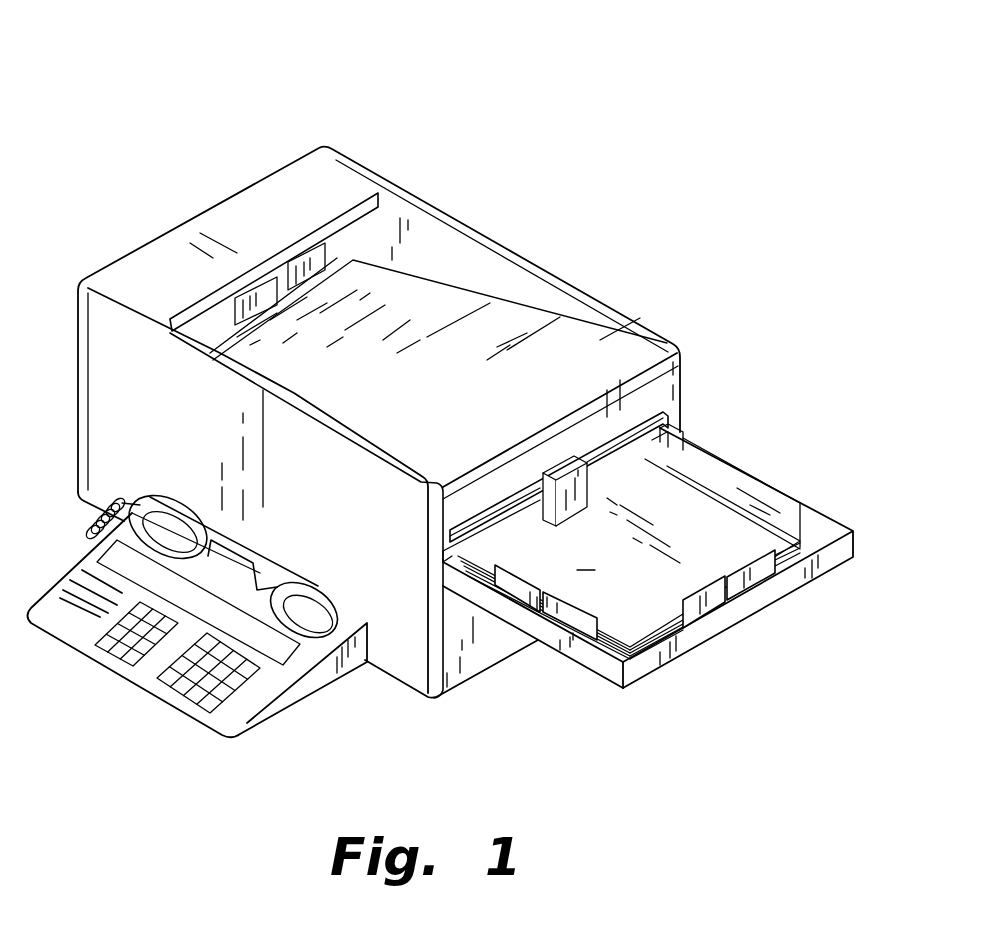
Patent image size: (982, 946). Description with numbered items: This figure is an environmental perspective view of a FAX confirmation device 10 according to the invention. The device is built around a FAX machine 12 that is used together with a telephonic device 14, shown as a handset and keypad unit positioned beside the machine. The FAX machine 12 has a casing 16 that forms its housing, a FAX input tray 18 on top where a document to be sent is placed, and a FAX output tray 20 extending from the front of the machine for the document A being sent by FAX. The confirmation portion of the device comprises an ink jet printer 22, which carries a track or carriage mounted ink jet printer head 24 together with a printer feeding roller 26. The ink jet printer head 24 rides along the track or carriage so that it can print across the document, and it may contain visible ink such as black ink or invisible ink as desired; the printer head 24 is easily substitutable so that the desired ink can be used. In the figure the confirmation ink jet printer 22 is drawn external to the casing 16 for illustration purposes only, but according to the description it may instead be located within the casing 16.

The FAX confirmation device 10 is at (690, 84).
The FAX machine 12 is at (497, 242).
The telephonic device 14 is at (293, 694).
The casing 16 is at (253, 197).
The FAX input tray 18 is at (417, 400).
The FAX output tray 20 is at (781, 490).
The ink jet printer 22 is at (667, 422).
The ink jet printer head 24 is at (543, 480).
The printer feeding roller 26 is at (688, 434).